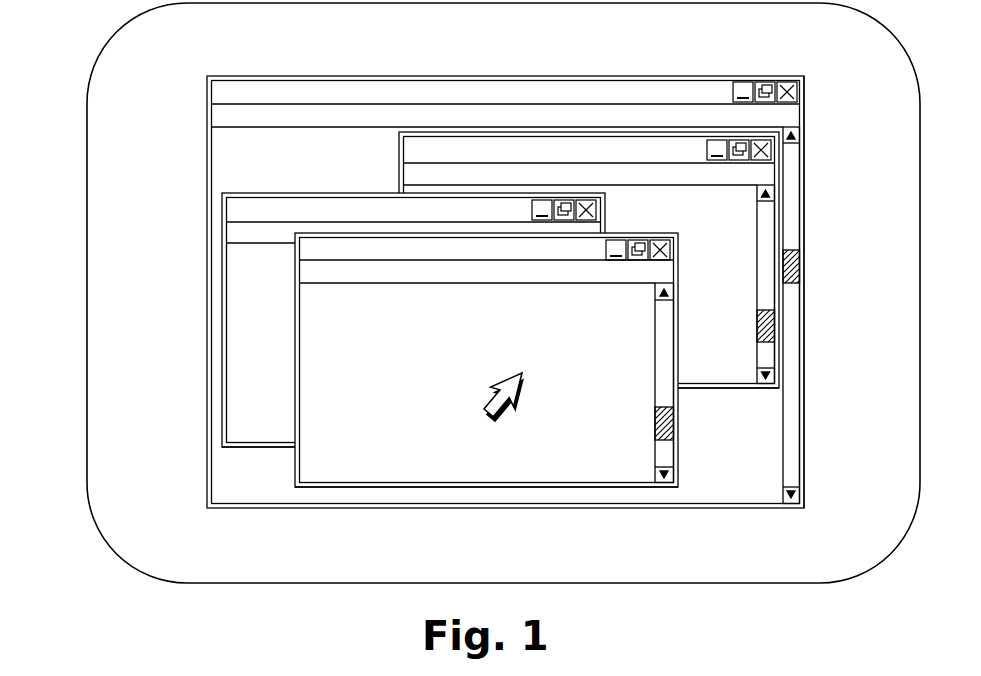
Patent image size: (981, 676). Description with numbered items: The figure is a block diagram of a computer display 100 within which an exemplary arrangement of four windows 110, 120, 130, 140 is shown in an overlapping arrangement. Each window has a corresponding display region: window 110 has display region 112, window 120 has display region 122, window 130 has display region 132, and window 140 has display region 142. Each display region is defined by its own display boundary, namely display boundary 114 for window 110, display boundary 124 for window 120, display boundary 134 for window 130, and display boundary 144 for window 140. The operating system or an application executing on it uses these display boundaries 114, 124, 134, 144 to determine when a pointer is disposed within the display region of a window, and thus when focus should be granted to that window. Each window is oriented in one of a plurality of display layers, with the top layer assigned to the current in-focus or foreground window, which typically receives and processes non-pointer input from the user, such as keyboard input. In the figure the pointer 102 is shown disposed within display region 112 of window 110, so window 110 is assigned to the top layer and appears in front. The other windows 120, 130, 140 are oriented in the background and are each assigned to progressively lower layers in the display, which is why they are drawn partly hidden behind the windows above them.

The computer display 100 is at (115, 36).
The pointer 102 is at (507, 392).
The window 110 is at (636, 442).
The display region 112 is at (353, 467).
The display boundary 114 is at (417, 488).
The window 120 is at (312, 210).
The display region 122 is at (273, 427).
The display boundary 124 is at (238, 448).
The window 130 is at (725, 355).
The display region 132 is at (730, 222).
The display boundary 134 is at (697, 390).
The window 140 is at (792, 330).
The display region 142 is at (372, 162).
The display boundary 144 is at (805, 172).